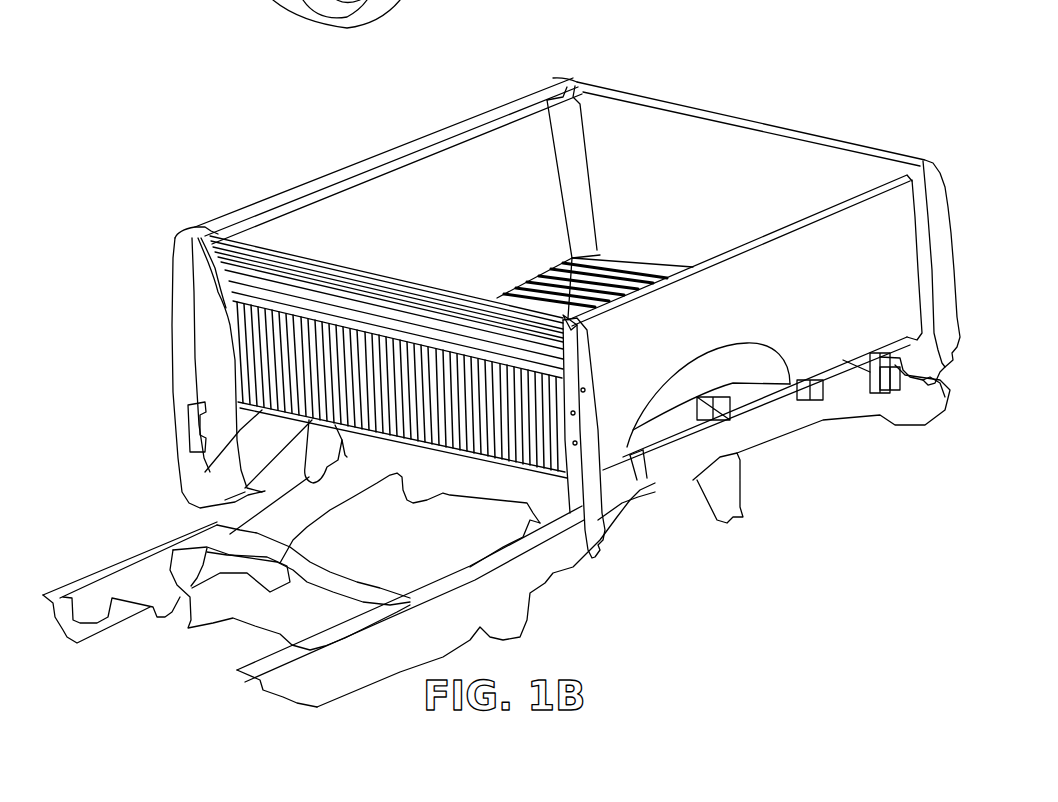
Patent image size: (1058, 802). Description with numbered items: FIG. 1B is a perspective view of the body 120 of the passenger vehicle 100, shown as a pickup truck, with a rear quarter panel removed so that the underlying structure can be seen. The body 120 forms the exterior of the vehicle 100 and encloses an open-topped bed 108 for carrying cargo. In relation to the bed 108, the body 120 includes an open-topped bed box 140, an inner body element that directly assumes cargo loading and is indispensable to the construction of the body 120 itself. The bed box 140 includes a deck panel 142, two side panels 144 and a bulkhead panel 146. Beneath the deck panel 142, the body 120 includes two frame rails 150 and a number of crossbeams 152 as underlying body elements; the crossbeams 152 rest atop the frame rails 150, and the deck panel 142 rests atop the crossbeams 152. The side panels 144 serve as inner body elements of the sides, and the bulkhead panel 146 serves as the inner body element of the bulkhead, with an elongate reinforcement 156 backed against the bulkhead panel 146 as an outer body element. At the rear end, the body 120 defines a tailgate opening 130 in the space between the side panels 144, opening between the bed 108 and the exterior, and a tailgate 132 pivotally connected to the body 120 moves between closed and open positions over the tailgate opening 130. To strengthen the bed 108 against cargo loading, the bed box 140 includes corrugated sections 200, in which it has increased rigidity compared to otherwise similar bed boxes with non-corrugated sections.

The passenger vehicle 100 is at (594, 81).
The bed 108 is at (618, 84).
The body 120 is at (648, 89).
The tailgate opening 130 is at (737, 148).
The tailgate 132 is at (832, 133).
The bed box 140 is at (557, 167).
The deck panel 142 is at (548, 293).
The side panels 144 is at (722, 253).
The bulkhead panel 146 is at (252, 312).
The frame rails 150 is at (648, 446).
The crossbeams 152 is at (640, 432).
The elongate reinforcement 156 is at (255, 283).
The corrugated sections 200 is at (255, 340).